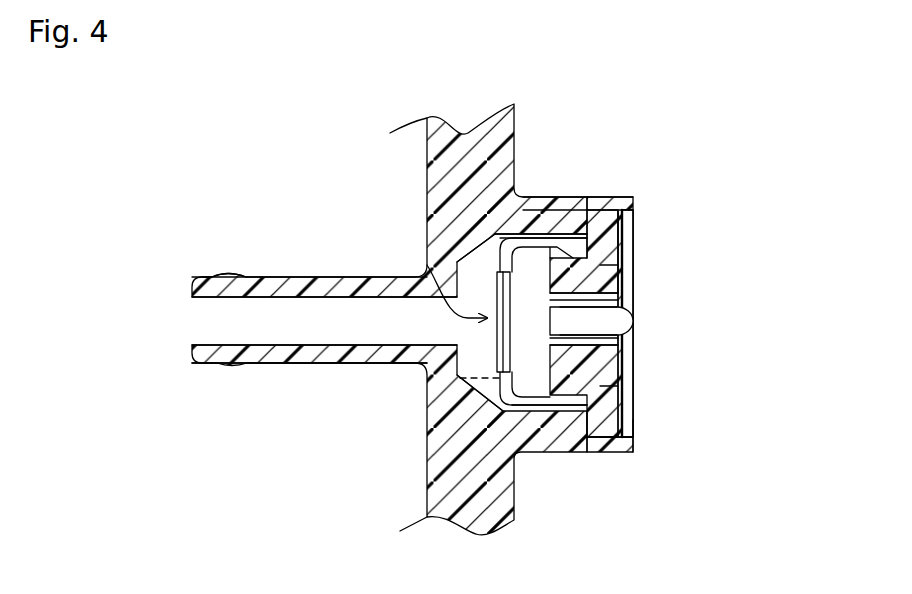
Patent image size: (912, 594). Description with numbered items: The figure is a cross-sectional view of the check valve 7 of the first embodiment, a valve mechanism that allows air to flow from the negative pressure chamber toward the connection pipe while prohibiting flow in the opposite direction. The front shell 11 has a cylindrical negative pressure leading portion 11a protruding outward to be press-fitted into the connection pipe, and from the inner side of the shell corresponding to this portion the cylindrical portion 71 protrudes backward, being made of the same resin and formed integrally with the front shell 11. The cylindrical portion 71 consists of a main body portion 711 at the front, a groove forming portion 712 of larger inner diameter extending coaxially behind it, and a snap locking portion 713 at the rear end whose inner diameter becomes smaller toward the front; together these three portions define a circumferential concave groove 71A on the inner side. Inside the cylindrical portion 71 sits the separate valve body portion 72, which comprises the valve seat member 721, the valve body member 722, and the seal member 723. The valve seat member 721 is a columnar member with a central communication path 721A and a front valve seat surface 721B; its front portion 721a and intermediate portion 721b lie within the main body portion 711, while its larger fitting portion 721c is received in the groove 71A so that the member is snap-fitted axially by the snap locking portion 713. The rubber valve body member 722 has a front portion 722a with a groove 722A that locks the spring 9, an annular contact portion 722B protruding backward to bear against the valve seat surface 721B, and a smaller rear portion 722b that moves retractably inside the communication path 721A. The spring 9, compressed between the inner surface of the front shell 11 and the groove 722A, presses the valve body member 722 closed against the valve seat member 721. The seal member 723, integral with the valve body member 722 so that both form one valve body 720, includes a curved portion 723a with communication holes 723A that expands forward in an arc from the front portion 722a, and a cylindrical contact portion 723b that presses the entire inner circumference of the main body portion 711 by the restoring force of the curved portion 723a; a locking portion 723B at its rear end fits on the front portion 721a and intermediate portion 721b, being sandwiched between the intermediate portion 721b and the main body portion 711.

The check valve 7 is at (221, 100).
The spring 9 is at (427, 265).
The front shell 11 is at (427, 147).
The negative pressure leading portion 11a is at (217, 275).
The cylindrical portion 71 is at (720, 123).
The main body portion 711 is at (548, 220).
The groove forming portion 712 is at (618, 212).
The snap locking portion 713 is at (626, 204).
The groove 71A is at (620, 218).
The valve body portion 72 is at (395, 290).
The valve body 720 is at (427, 365).
The valve seat member 721 is at (746, 474).
The communication path 721A is at (620, 346).
The valve seat surface 721B is at (552, 385).
The front portion 721a is at (573, 452).
The intermediate portion 721b is at (587, 452).
The fitting portion 721c is at (633, 420).
The valve body member 722 is at (740, 276).
The groove 722A is at (497, 372).
The contact portion 722B is at (600, 265).
The front portion 722a is at (640, 297).
The rear portion 722b is at (640, 322).
The seal member 723 is at (298, 432).
The communication holes 723A is at (500, 232).
The locking portion 723B is at (612, 247).
The curved portion 723a is at (432, 428).
The contact portion 723b is at (432, 476).